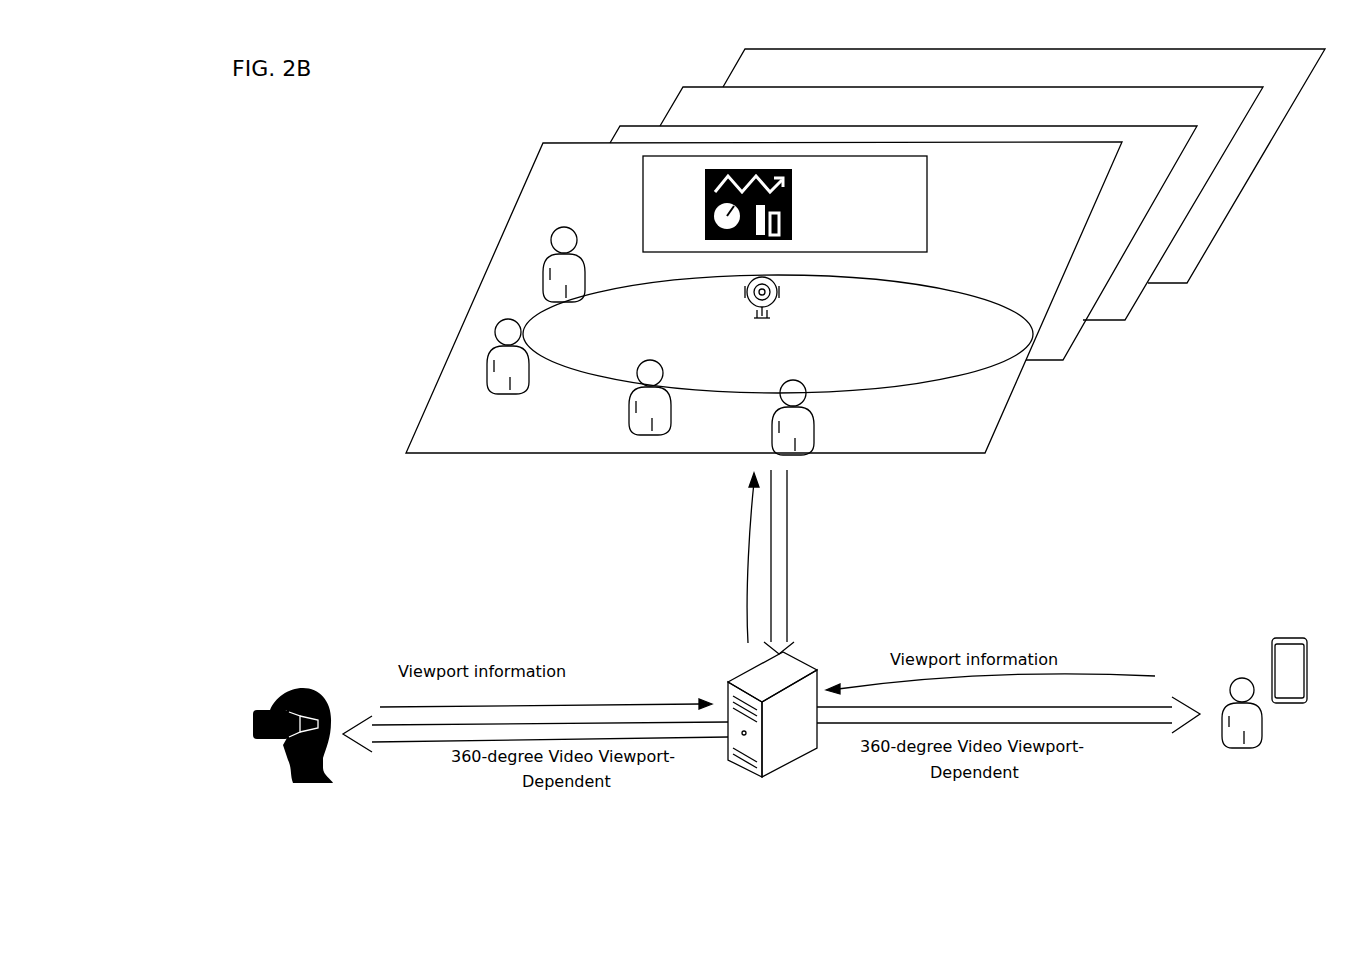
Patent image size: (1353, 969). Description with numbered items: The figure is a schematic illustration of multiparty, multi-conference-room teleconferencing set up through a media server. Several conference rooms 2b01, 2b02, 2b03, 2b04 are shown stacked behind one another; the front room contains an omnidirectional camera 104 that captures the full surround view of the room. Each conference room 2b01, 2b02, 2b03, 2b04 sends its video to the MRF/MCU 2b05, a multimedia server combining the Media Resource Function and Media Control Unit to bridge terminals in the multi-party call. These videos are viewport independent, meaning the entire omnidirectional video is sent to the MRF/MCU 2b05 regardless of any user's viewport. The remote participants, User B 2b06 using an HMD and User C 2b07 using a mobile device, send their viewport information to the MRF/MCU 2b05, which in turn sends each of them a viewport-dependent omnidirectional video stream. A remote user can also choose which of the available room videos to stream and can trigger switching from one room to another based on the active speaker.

The conference room 2b01 is at (483, 268).
The conference room 2b02 is at (610, 128).
The conference room 2b03 is at (677, 90).
The conference room 2b04 is at (753, 70).
The MRF/MCU 2b05 is at (730, 677).
The User B 2b06 is at (248, 705).
The User C 2b07 is at (1272, 640).
The omnidirectional/360-degree camera 104 is at (780, 303).